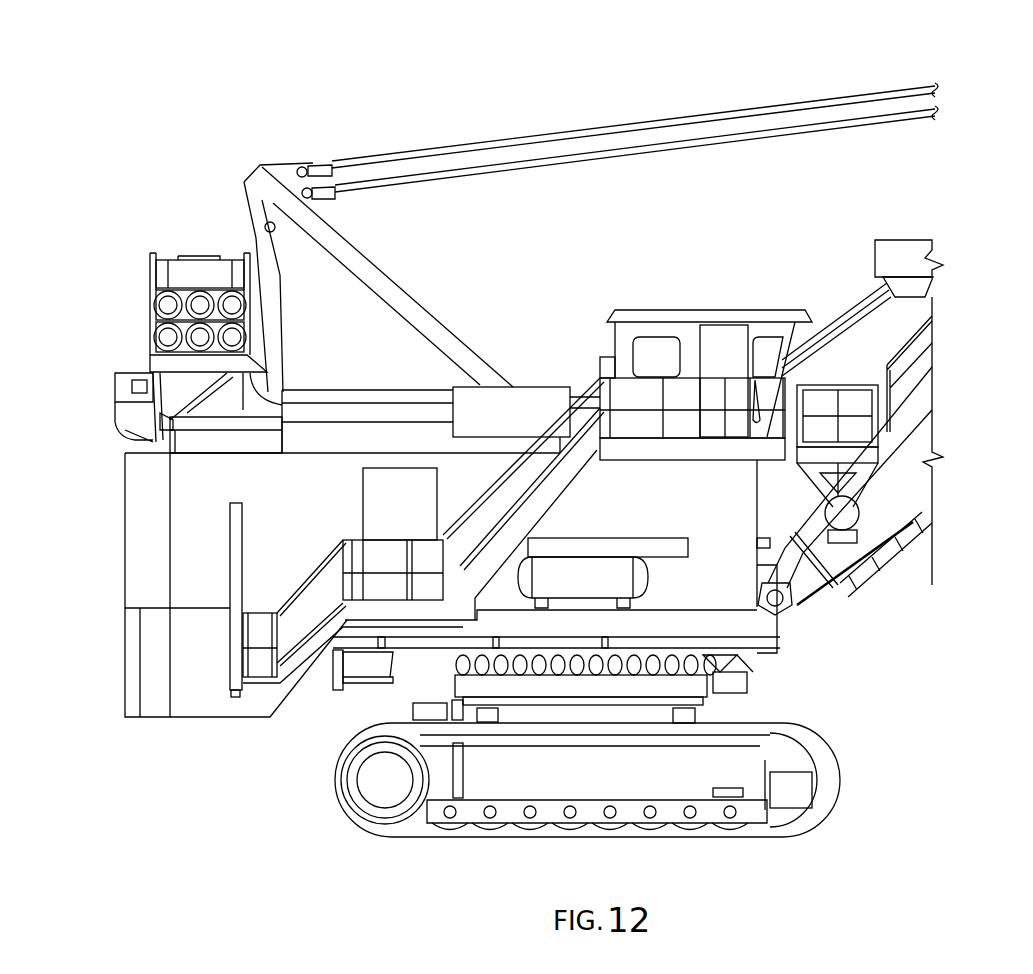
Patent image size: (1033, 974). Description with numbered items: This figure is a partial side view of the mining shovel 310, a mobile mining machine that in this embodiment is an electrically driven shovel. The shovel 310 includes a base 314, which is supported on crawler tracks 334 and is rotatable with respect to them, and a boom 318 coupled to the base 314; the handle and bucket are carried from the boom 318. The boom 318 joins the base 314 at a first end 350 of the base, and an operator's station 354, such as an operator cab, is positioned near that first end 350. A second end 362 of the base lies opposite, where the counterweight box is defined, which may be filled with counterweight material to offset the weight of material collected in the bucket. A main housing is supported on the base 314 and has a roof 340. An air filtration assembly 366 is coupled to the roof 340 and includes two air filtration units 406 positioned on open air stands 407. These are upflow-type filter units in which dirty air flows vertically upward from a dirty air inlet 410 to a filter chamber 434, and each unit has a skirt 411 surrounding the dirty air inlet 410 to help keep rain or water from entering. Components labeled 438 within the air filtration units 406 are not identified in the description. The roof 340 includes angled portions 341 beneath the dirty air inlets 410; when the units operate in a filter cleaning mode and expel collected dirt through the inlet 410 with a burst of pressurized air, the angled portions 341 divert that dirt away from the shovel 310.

The mining shovel 310 is at (635, 89).
The base 314 is at (300, 707).
The boom 318 is at (920, 487).
The crawler tracks 334 is at (832, 758).
The roof 340 is at (355, 389).
The angled portions 341 is at (130, 432).
The first end 350 is at (888, 632).
The operator's station 354 is at (708, 310).
The second end 362 is at (99, 672).
The air filtration assembly 366 is at (224, 158).
The air filtration units 406 is at (157, 278).
The open air stands 407 is at (215, 393).
The dirty air inlet 410 is at (180, 388).
The skirt 411 is at (160, 366).
The filter chamber 434 is at (158, 275).
The hoses 438 is at (165, 338).